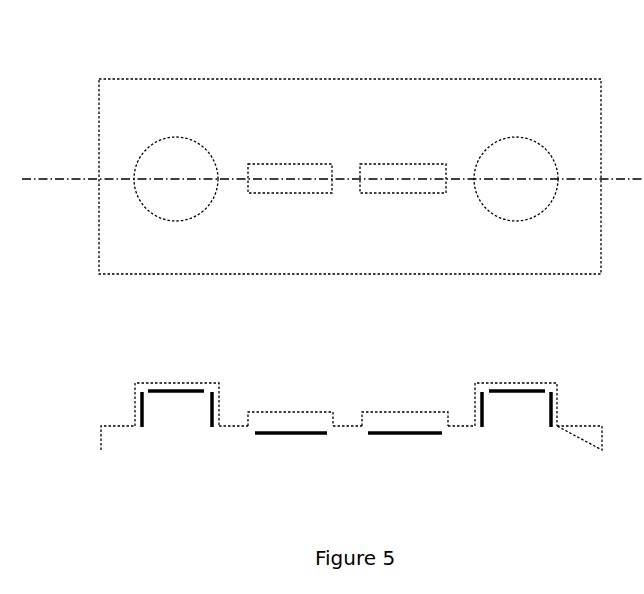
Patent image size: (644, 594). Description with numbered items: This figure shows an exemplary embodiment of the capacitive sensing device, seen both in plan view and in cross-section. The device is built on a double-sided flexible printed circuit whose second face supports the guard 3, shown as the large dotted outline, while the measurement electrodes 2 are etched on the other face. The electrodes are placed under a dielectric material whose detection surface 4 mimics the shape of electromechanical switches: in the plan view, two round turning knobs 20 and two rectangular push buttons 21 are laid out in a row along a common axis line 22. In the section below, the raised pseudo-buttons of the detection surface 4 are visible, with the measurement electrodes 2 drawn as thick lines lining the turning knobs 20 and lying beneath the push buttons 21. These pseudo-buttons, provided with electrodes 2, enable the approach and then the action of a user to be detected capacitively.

The measurement electrodes 2 is at (142, 408).
The guard 3 is at (112, 222).
The detection surface 4 is at (290, 412).
The turning knobs 20 is at (176, 137).
The push buttons 21 is at (305, 164).
The axis line 22 is at (77, 178).